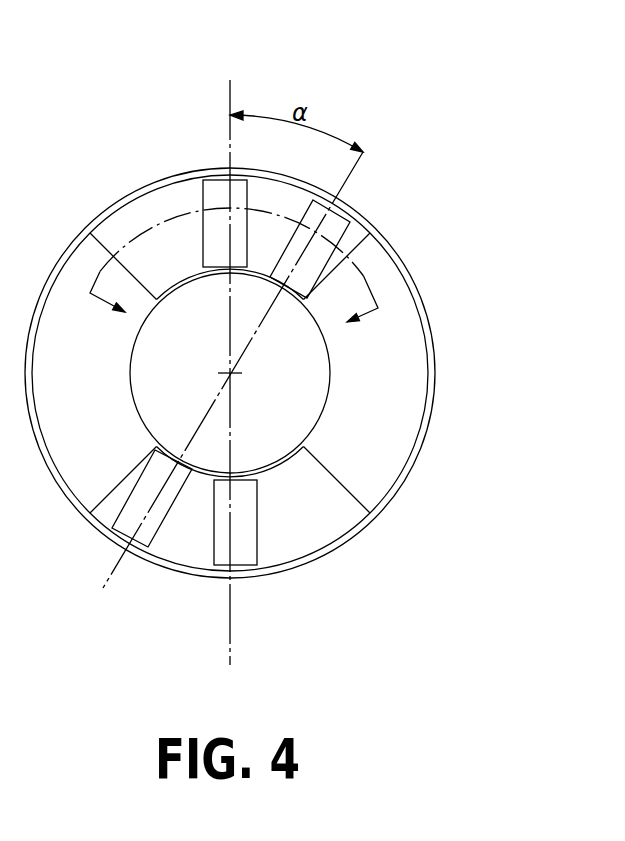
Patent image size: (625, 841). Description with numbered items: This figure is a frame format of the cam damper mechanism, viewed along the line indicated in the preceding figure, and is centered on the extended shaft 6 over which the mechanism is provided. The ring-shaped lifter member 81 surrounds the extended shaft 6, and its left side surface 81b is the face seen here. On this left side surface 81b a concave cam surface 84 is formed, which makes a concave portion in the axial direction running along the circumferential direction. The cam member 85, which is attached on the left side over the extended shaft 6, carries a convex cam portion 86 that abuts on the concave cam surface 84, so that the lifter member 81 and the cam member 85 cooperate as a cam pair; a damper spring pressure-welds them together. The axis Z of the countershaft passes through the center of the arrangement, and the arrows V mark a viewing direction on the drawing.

The lifter member 81 is at (420, 292).
The left side surface 81b is at (377, 408).
The extended shaft 6 is at (332, 367).
The concave cam surface 84 is at (315, 513).
The convex cam portion 86 is at (299, 292).
The cam member 85 is at (195, 190).
The axis Z is at (230, 373).
The view direction arrow V is at (235, 274).